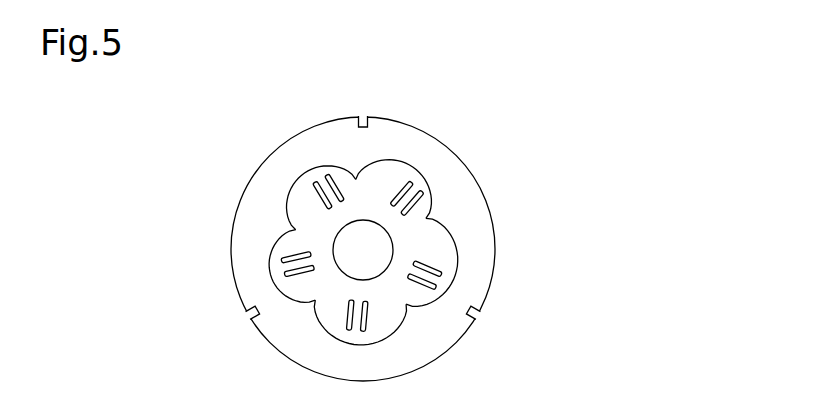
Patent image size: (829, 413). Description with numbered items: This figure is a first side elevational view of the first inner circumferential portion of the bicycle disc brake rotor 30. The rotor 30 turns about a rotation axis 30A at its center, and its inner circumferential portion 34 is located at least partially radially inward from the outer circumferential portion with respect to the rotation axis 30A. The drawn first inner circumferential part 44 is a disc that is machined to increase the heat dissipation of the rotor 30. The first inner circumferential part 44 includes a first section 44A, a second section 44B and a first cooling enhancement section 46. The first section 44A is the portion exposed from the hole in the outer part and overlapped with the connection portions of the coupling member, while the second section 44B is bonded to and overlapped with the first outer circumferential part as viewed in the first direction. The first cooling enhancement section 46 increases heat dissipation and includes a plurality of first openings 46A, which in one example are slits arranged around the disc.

The bicycle disc brake rotor 30 is at (658, 113).
The rotation axis 30A is at (362, 248).
The inner circumferential portion 34 is at (471, 259).
The first inner circumferential part 44 is at (438, 252).
The first section 44A is at (440, 248).
The second section 44B is at (460, 210).
The first cooling enhancement section 46 is at (475, 310).
The first openings 46A is at (428, 269).